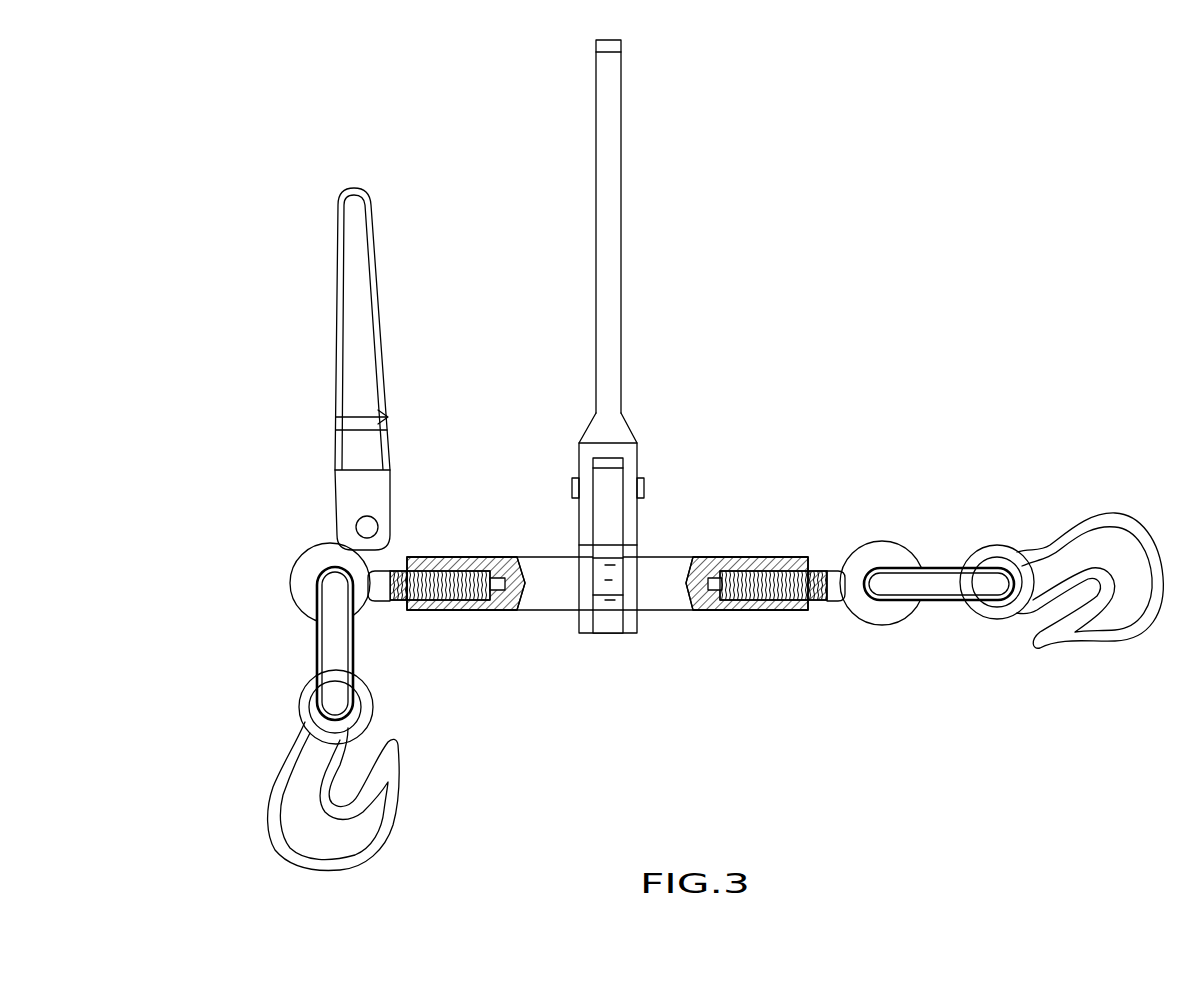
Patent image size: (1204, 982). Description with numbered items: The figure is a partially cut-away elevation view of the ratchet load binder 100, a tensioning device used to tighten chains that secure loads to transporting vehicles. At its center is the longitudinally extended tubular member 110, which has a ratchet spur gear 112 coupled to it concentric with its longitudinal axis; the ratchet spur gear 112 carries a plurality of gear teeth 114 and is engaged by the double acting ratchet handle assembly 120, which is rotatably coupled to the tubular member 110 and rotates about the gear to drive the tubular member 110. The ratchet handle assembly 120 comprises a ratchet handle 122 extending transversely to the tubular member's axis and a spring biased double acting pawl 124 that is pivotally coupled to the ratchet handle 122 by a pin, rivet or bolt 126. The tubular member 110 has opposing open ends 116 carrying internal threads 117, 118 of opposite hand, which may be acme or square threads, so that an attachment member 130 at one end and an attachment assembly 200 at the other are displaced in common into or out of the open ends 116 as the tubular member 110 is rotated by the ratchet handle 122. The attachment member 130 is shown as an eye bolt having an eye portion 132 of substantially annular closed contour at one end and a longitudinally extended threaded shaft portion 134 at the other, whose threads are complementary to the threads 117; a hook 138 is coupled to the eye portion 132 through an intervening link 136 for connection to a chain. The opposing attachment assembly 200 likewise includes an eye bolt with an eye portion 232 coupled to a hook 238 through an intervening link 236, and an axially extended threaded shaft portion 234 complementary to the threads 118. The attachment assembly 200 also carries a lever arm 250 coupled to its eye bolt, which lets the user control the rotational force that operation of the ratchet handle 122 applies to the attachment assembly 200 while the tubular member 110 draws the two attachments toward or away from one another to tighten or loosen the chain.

The ratchet load binder 100 is at (760, 190).
The tubular member 110 is at (682, 557).
The ratchet spur gear 112 is at (605, 580).
The gear teeth 114 is at (613, 565).
The open ends 116 is at (398, 612).
The internal threads 117 is at (717, 557).
The internal threads 118 is at (507, 565).
The double acting ratchet handle assembly 120 is at (650, 416).
The ratchet handle 122 is at (621, 203).
The spring biased double acting pawl 124 is at (608, 500).
The pin, rivet or bolt 126 is at (643, 488).
The attachment member 130 is at (833, 595).
The eye portion 132 is at (900, 545).
The threaded shaft portion 134 is at (820, 557).
The link 136 is at (947, 567).
The hook 138 is at (1115, 515).
The attachment assembly 200 is at (287, 374).
The eye portion 232 is at (300, 548).
The threaded shaft portion 234 is at (395, 557).
The link 236 is at (318, 646).
The hook 238 is at (268, 788).
The lever arm 250 is at (374, 268).